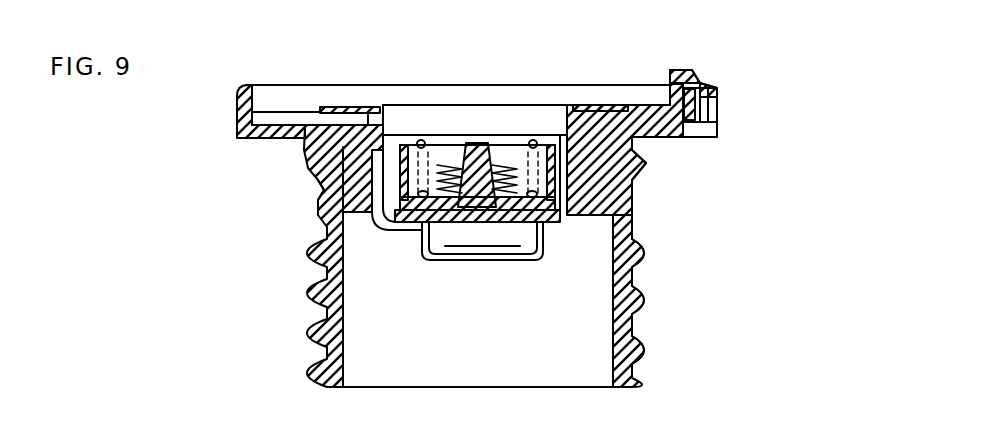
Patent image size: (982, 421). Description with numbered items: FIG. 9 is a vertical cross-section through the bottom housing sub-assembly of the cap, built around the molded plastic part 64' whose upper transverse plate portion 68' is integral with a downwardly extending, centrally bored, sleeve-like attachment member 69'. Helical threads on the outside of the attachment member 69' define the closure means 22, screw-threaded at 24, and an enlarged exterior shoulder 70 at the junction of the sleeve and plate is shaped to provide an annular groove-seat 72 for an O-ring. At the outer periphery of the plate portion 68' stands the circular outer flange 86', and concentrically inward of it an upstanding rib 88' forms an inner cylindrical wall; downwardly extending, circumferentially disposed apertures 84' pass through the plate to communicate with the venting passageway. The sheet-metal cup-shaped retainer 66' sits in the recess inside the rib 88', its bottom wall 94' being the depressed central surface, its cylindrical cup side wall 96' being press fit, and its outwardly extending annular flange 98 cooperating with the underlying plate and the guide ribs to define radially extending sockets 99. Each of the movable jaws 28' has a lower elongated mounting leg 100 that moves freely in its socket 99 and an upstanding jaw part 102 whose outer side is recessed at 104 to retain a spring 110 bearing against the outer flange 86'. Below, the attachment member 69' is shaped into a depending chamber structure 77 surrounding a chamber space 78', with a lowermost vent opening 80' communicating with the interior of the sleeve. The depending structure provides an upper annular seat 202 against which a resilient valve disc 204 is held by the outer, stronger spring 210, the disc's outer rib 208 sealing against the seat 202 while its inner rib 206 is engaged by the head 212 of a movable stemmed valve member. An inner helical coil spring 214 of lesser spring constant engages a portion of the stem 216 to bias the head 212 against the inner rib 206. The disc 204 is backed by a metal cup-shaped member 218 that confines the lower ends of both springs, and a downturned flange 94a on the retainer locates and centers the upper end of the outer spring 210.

The closure means 22 is at (645, 213).
The screw threads 24 is at (625, 308).
The movable jaws 28' is at (725, 81).
The unitary plastic member 64' is at (314, 256).
The cup-shaped retainer 66' is at (458, 78).
The upper transverse plate portion 68' is at (310, 93).
The attachment member 69' is at (538, 288).
The exterior shoulder 70 is at (647, 183).
The annular groove-seat 72 is at (645, 157).
The depending chamber structure 77 is at (398, 232).
The chamber space 78' is at (337, 198).
The vent opening 80' is at (483, 269).
The apertures 84' is at (252, 153).
The outer flange 86' is at (249, 111).
The upstanding rib 88' is at (581, 86).
The bottom wall 94' is at (430, 124).
The downturned flange 94a is at (529, 142).
The cup side wall 96' is at (475, 80).
The annular flange 98 is at (332, 107).
The radially extending sockets 99 is at (597, 112).
The mounting leg 100 is at (647, 120).
The jaw part 102 is at (675, 72).
The recess 104 is at (703, 78).
The spring 110 is at (710, 98).
The annular seat 202 is at (548, 230).
The valve disc 204 is at (323, 186).
The inner sealing rib 206 is at (505, 257).
The outer sealing rib 208 is at (540, 222).
The outer spring 210 is at (438, 137).
The valve head 212 is at (447, 240).
The inner helical coil spring 214 is at (505, 142).
The stem 216 is at (477, 182).
The cup-shaped member 218 is at (645, 173).